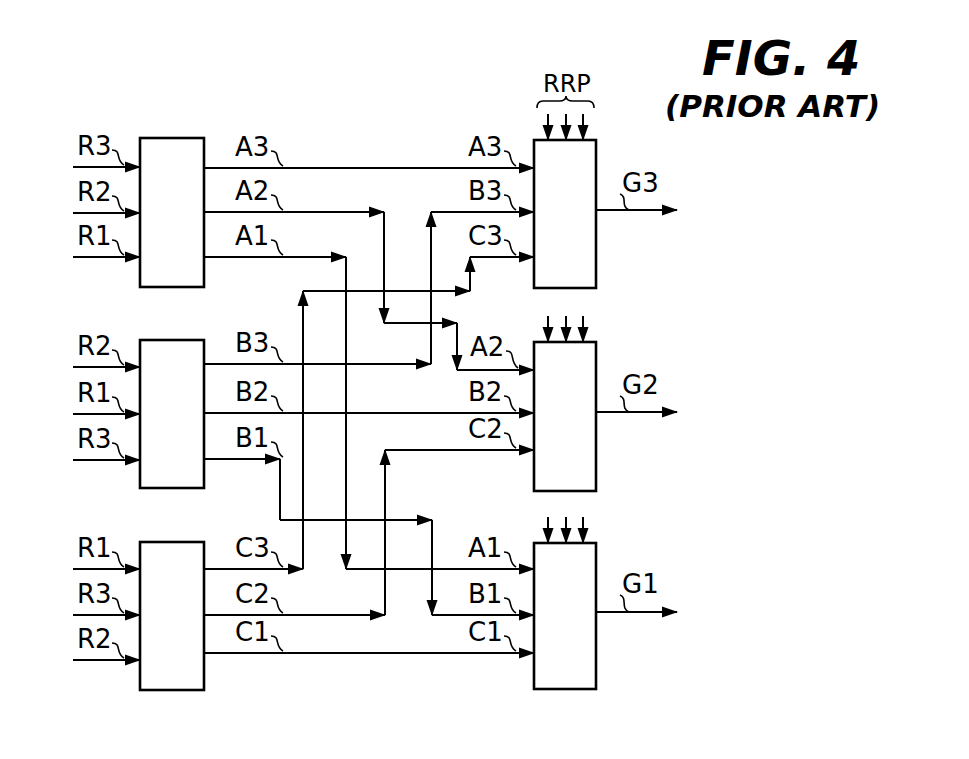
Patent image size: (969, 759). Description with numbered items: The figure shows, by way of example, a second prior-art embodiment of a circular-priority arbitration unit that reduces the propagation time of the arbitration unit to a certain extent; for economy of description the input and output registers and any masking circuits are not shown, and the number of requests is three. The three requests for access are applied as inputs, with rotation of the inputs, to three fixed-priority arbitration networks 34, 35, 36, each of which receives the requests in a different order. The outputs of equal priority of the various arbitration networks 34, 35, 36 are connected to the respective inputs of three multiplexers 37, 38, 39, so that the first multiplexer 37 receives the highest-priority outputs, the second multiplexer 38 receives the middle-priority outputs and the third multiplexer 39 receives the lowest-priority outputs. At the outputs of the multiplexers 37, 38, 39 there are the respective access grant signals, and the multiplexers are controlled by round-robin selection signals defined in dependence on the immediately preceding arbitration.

The fixed-priority arbitration network 34 is at (182, 138).
The fixed-priority arbitration network 35 is at (181, 340).
The fixed-priority arbitration network 36 is at (182, 542).
The multiplexer 37 is at (597, 268).
The multiplexer 38 is at (597, 452).
The multiplexer 39 is at (597, 650).